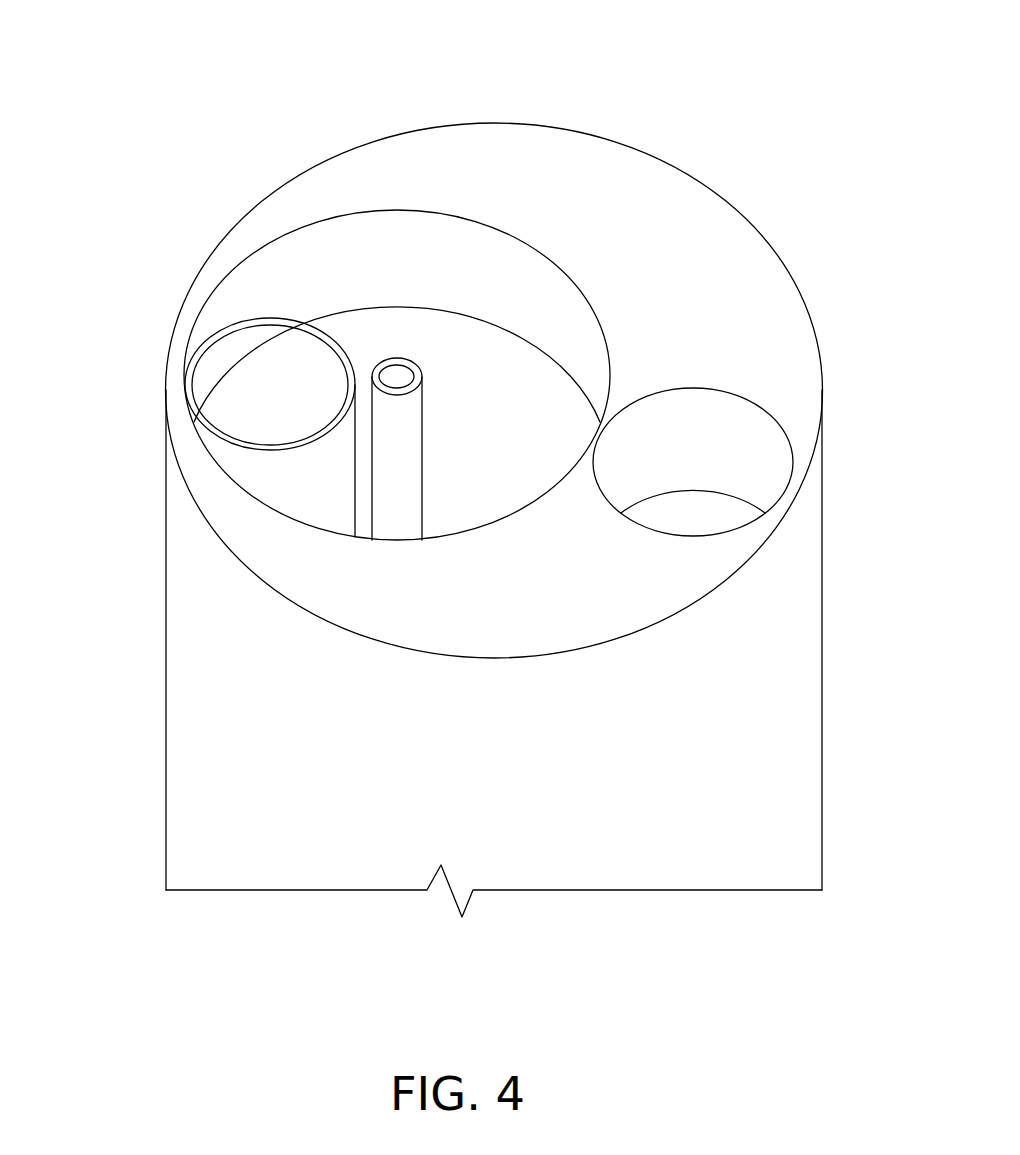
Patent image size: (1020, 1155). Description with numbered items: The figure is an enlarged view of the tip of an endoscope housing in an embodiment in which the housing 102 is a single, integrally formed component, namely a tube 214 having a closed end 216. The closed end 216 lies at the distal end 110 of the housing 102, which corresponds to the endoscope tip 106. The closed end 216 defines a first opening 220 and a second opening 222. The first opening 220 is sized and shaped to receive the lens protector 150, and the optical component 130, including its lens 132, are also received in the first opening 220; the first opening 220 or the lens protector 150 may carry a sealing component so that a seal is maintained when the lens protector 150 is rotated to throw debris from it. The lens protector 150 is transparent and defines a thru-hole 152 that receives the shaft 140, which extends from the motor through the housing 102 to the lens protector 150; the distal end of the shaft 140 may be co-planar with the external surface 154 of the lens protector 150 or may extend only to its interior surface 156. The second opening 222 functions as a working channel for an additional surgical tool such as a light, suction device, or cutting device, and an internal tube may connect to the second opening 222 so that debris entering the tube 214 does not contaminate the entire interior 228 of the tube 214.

The housing 102 is at (852, 758).
The endoscope tip 106 is at (123, 383).
The distal end 110 is at (783, 262).
The optical component 130 is at (255, 460).
The lens 132 is at (230, 380).
The shaft 140 is at (425, 418).
The lens protector 150 is at (312, 258).
The thru-hole 152 is at (395, 357).
The external surface 154 is at (256, 273).
The interior surface 156 is at (369, 256).
The tube 214 is at (177, 661).
The closed end 216 is at (673, 207).
The first opening 220 is at (465, 212).
The second opening 222 is at (758, 404).
The interior 228 is at (710, 522).